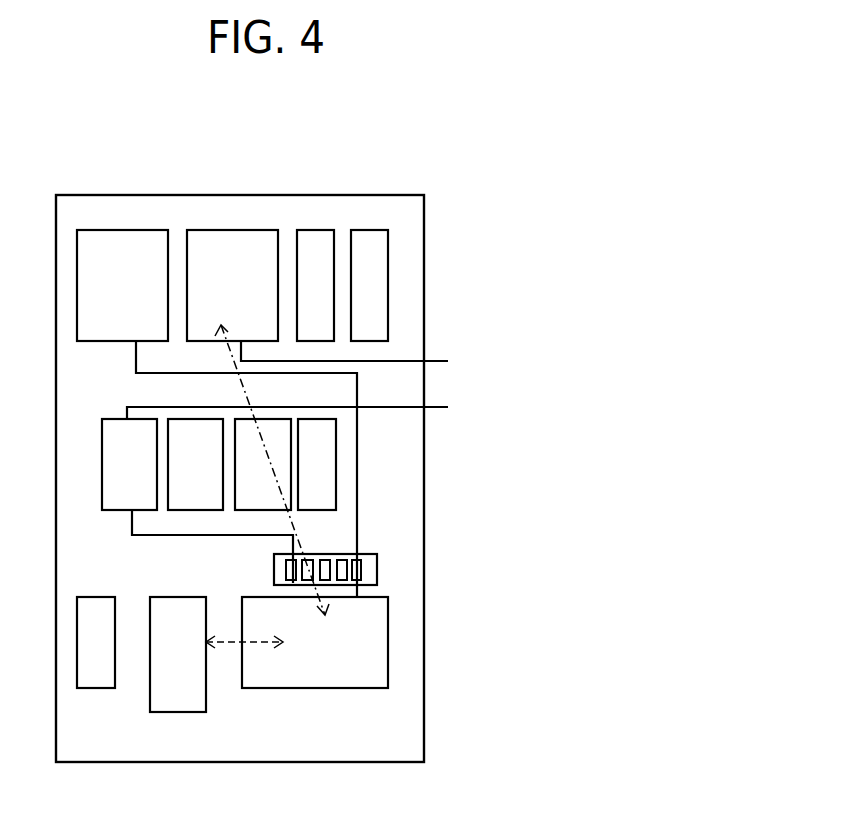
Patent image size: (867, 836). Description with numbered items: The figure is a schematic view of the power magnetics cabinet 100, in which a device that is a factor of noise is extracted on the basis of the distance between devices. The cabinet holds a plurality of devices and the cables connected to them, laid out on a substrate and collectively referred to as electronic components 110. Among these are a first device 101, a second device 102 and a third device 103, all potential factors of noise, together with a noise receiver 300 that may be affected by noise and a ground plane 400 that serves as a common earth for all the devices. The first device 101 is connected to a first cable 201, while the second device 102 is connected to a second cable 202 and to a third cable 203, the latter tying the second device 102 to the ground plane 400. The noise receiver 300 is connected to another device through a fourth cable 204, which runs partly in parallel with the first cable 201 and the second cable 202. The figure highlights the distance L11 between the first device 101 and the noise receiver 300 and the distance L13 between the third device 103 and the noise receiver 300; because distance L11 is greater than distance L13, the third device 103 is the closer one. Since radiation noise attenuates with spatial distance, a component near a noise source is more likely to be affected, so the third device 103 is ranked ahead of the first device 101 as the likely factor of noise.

The power magnetics cabinet 100 is at (277, 194).
The electronic components 110 is at (232, 242).
The first device 101 is at (251, 305).
The second device 102 is at (148, 479).
The third device 103 is at (198, 666).
The first cable 201 is at (443, 360).
The second cable 202 is at (443, 405).
The third cable 203 is at (163, 535).
The fourth cable 204 is at (357, 498).
The noise receiver 300 is at (326, 660).
The ground plane 400 is at (370, 567).
The distance between first device and noise receiver L11 is at (243, 393).
The distance between third device and noise receiver L13 is at (227, 645).